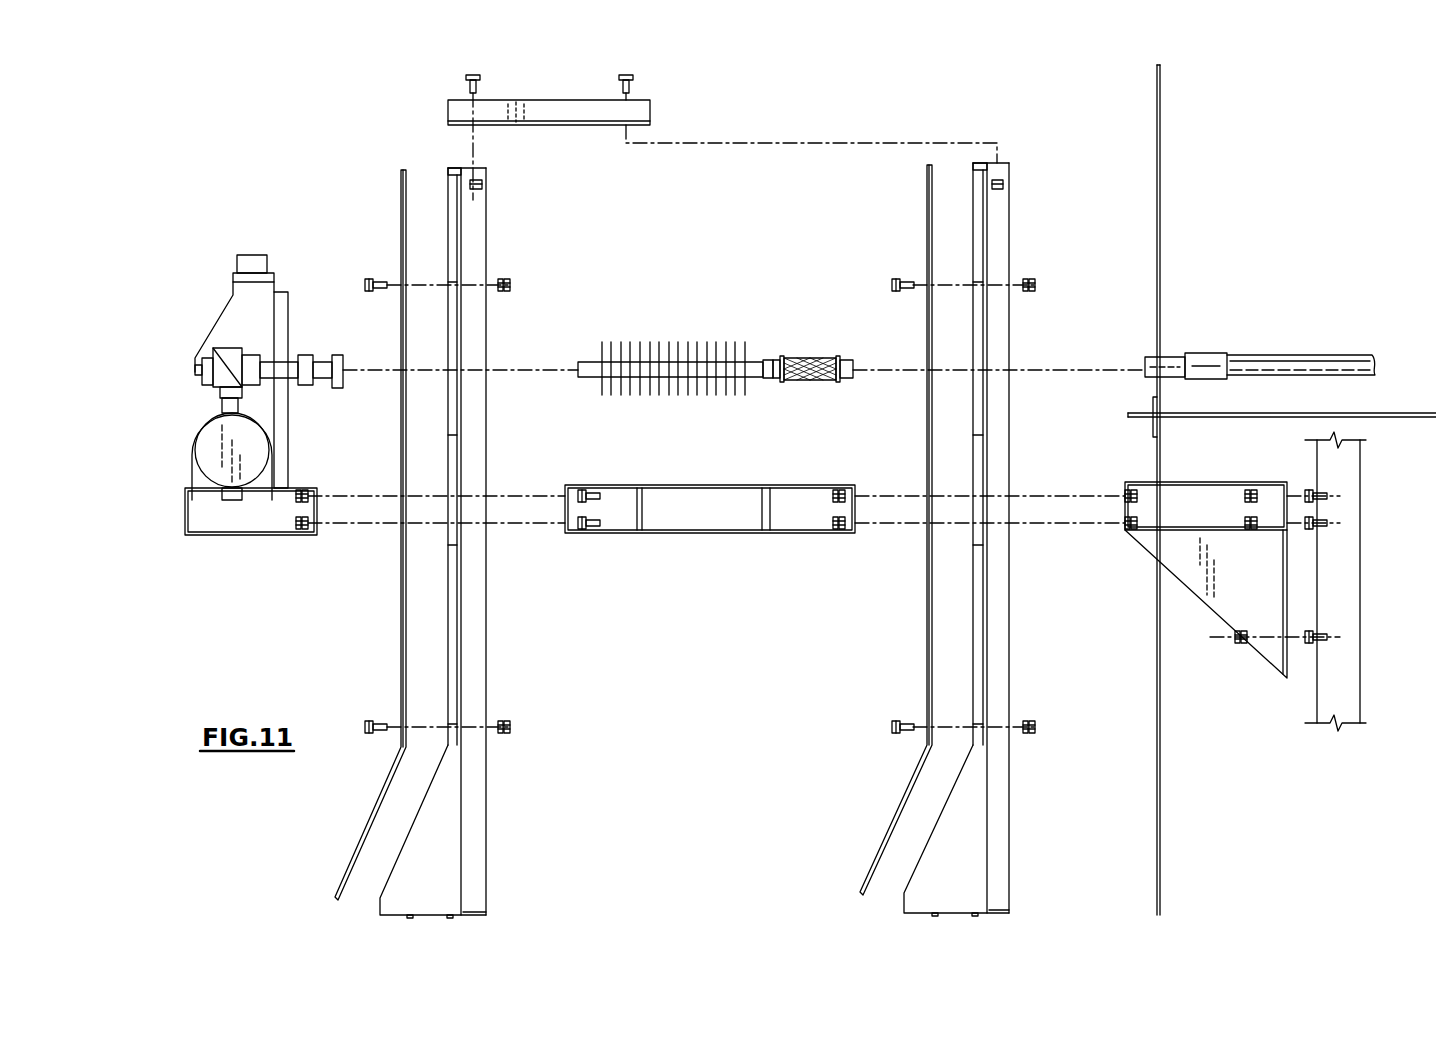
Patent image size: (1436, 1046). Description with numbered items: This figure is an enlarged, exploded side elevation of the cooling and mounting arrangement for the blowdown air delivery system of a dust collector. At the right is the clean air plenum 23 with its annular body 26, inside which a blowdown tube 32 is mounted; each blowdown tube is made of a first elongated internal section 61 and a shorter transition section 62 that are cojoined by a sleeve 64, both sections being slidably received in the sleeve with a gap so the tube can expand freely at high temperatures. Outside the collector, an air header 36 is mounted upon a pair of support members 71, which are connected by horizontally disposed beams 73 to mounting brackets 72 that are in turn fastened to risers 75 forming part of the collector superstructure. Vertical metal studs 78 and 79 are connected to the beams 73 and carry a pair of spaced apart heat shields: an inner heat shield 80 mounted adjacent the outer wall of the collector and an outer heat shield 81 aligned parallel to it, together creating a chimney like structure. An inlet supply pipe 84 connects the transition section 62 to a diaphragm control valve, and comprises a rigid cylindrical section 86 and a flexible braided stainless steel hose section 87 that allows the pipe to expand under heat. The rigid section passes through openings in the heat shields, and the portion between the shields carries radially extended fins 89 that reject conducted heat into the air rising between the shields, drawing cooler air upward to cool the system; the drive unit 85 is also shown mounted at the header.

The clean air plenum 23 is at (1256, 490).
The annular body 26 is at (1162, 158).
The blowdown tube 32 is at (1279, 337).
The air header 36 is at (210, 455).
The elongated internal section 61 is at (1355, 355).
The transition section 62 is at (1170, 355).
The sleeve 64 is at (1213, 353).
The support member 71 is at (227, 535).
The mounting bracket 72 is at (1145, 548).
The horizontally disposed beam 73 is at (762, 533).
The riser 75 is at (1347, 570).
The vertical metal stud 78 is at (487, 676).
The vertical metal stud 79 is at (1010, 580).
The inner heat shield 80 is at (927, 190).
The outer heat shield 81 is at (401, 193).
The inlet supply pipe 84 is at (704, 366).
The motor 85 is at (200, 399).
The rigid cylindrical section 86 is at (590, 362).
The flexible braided hose section 87 is at (805, 358).
The radially extended fins 89 is at (612, 350).